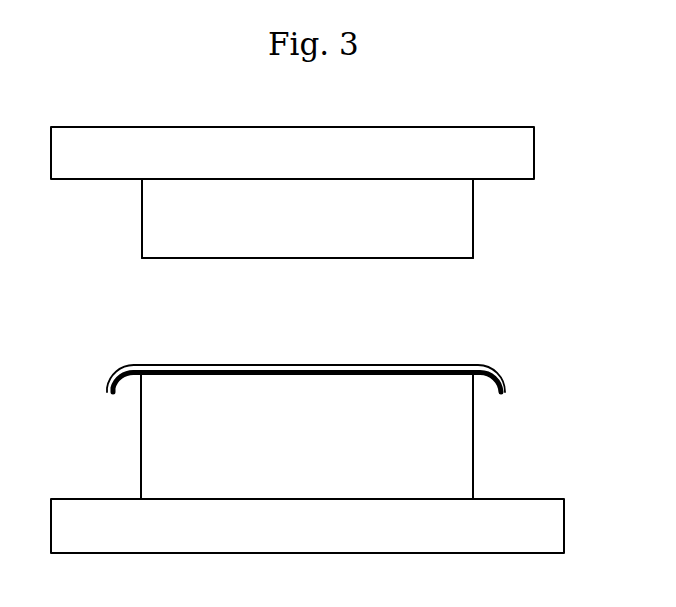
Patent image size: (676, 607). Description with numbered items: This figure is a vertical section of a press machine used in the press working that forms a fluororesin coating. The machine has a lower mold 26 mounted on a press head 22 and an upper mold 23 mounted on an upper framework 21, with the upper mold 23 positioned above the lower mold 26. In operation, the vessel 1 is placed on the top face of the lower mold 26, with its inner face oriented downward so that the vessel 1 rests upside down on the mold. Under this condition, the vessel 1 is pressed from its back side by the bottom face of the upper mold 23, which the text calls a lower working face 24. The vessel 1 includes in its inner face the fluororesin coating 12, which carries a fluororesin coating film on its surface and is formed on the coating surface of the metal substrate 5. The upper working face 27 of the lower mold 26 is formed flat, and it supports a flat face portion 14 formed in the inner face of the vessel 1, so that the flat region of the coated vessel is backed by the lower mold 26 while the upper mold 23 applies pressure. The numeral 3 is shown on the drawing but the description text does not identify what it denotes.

The upper framework 21 is at (408, 138).
The upper mold 23 is at (450, 213).
The lower working face 24 is at (440, 260).
The metal sheet 3 is at (223, 363).
The vessel 1 is at (358, 373).
The upper working face 27 is at (372, 370).
The metal substrate 5 is at (428, 367).
The fluororesin coating 12 is at (485, 398).
The flat face portion 14 is at (310, 378).
The lower mold 26 is at (462, 448).
The press head 22 is at (542, 525).